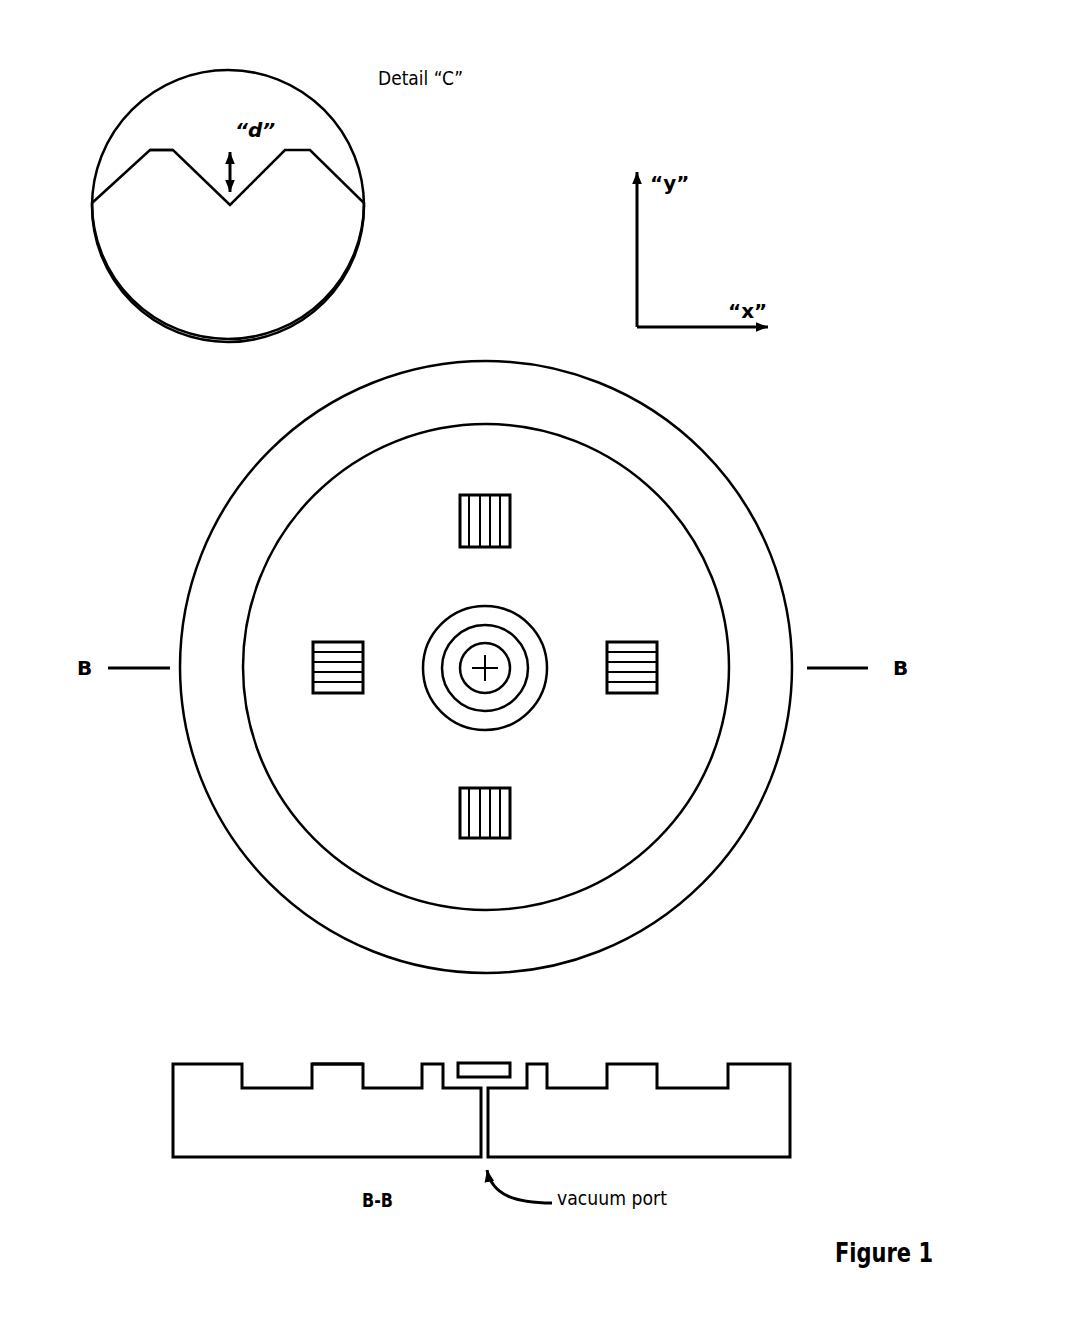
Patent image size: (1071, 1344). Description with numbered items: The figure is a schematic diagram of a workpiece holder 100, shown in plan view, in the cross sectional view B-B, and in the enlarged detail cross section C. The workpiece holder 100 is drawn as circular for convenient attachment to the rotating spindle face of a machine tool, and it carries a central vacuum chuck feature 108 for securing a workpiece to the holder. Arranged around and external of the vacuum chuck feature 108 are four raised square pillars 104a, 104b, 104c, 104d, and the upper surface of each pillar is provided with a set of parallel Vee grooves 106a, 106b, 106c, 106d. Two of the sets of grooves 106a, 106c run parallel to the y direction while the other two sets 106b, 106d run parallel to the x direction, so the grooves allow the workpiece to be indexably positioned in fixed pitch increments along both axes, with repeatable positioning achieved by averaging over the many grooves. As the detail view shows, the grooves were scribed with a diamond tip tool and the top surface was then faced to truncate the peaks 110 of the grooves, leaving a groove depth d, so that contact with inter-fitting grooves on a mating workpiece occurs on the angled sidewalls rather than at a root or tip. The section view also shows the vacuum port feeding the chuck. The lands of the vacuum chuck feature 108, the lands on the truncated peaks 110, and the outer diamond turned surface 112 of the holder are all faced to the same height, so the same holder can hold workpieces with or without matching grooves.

The workpiece holder 100 is at (793, 124).
The raised pillar 104a is at (252, 285).
The raised pillar 104b is at (345, 619).
The raised pillar 104c is at (533, 807).
The raised pillar 104d is at (627, 629).
The set of Vee grooves 106a is at (230, 96).
The set of Vee grooves 106b is at (333, 662).
The set of Vee grooves 106c is at (488, 812).
The set of Vee grooves 106d is at (638, 662).
The vacuum chuck feature 108 is at (519, 726).
The peaks of the grooves 110 is at (158, 144).
The outer diamond turned surface 112 is at (192, 1057).